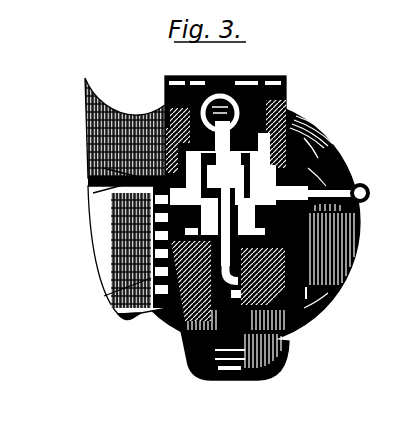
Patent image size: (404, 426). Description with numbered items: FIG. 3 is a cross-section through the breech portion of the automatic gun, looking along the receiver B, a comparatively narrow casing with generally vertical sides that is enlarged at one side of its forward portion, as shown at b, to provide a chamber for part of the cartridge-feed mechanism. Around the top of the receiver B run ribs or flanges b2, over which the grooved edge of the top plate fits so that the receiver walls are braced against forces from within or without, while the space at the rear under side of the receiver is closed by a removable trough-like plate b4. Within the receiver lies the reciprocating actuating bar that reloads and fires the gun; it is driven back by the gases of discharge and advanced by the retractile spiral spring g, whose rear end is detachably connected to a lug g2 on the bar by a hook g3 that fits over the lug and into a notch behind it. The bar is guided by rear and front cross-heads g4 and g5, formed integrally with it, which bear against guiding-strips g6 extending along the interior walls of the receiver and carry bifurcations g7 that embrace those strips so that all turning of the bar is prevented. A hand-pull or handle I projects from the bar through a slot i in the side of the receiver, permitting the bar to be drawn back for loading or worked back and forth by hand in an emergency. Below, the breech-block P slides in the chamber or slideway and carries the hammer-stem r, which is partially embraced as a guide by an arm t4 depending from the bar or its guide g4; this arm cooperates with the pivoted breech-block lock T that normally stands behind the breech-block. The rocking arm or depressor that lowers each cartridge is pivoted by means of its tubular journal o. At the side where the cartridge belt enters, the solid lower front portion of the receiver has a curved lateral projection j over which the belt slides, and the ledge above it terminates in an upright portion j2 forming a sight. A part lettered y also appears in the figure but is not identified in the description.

The receiver B is at (322, 283).
The spiral spring g is at (158, 89).
The lug g2 is at (380, 158).
The hook g3 is at (221, 69).
The rear guide or cross-head g4 is at (220, 169).
The front guide or cross-head g5 is at (148, 197).
The guiding-strips g6 is at (315, 124).
The bifurcations or projections g7 is at (300, 107).
The enlarged side portion of receiver b is at (325, 146).
The ribs or flanges b2 is at (272, 87).
The bottom plate or cover b4 is at (262, 349).
The hand-pull or handle I is at (364, 190).
The slot i is at (355, 222).
The journal o is at (345, 248).
The hammer-stem r is at (306, 304).
The breech-block lock T is at (290, 320).
The arm t4 is at (334, 300).
The breech-block P is at (137, 306).
The lateral projection j is at (394, 117).
The upright portion j2 is at (95, 160).
The lever y is at (394, 135).